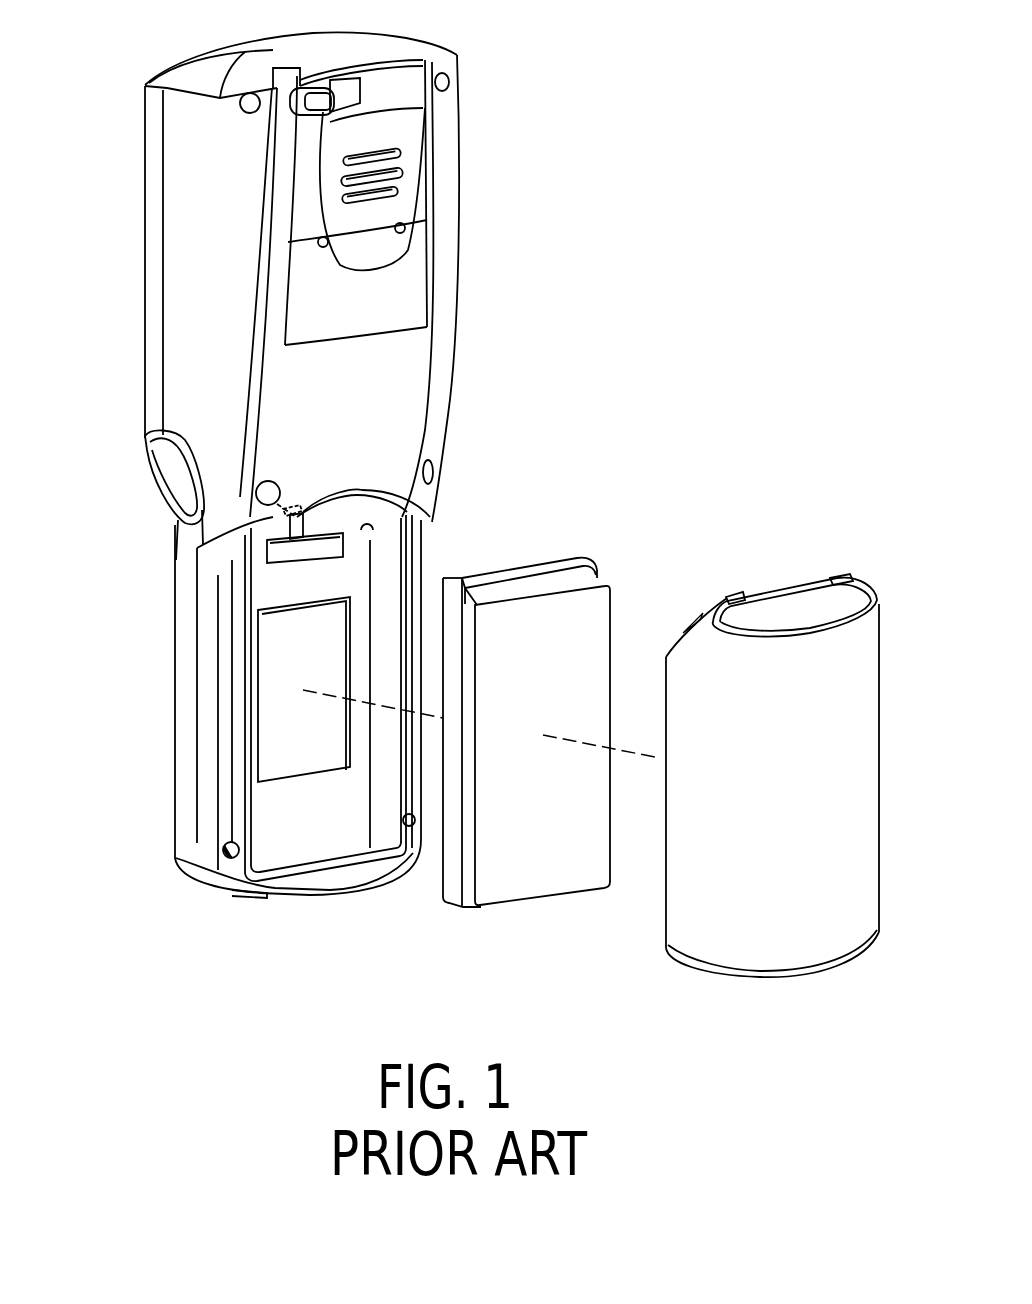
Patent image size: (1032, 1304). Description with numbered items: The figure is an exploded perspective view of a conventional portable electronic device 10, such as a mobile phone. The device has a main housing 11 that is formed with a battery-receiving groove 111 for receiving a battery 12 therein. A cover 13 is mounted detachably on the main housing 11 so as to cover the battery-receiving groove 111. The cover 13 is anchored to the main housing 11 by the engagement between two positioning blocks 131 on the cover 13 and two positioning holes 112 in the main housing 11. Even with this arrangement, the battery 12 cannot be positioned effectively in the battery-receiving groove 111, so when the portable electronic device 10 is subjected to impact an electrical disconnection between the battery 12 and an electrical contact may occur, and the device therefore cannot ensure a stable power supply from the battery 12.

The portable electronic device 10 is at (482, 46).
The main housing 11 is at (460, 100).
The battery-receiving groove 111 is at (295, 850).
The positioning holes 112 is at (256, 494).
The battery 12 is at (513, 883).
The cover 13 is at (770, 950).
The positioning blocks 131 is at (728, 591).